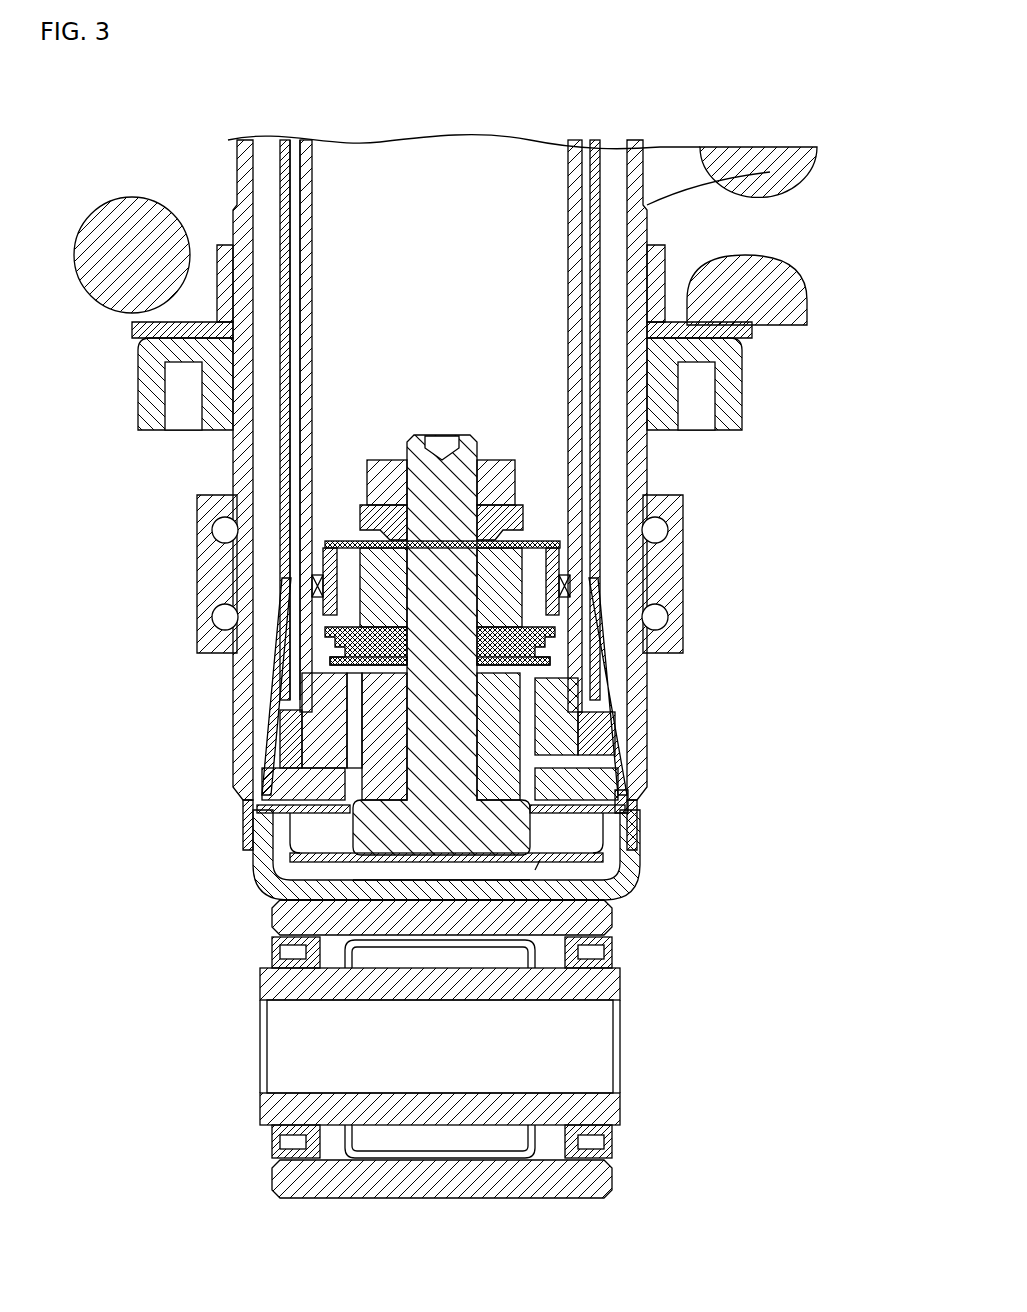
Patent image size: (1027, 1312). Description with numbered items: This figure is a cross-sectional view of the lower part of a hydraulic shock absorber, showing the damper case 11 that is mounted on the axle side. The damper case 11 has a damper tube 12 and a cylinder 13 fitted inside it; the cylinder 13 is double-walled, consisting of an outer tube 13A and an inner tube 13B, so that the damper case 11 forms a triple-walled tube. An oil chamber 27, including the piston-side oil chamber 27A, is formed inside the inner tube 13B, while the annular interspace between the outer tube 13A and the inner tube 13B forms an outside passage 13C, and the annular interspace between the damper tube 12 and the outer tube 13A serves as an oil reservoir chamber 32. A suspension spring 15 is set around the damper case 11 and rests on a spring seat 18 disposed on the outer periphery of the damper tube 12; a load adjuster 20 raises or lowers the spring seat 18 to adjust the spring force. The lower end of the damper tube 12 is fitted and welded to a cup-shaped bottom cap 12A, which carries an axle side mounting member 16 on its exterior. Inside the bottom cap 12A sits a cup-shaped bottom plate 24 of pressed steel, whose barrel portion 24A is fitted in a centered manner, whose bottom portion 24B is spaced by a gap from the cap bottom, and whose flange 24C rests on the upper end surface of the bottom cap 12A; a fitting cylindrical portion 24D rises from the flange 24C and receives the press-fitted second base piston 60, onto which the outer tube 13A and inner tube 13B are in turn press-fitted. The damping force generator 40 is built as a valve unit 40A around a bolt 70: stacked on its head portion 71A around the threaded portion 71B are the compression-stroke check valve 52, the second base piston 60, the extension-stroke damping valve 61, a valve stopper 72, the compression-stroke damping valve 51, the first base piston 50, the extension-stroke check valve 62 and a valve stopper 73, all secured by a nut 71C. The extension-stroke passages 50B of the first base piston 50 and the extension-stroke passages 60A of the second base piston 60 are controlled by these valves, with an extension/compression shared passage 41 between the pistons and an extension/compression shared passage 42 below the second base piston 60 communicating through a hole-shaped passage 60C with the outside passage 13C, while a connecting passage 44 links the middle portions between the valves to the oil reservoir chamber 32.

The damper case 11 is at (232, 148).
The damper tube 12 is at (240, 172).
The bottom cap 12A is at (268, 872).
The cylinder 13 is at (498, 426).
The outer tube 13A is at (576, 216).
The inner tube 13B is at (595, 236).
The outside passage 13C is at (296, 240).
The suspension spring 15 is at (136, 200).
The axle side mounting member 16 is at (278, 1178).
The spring seat 18 is at (135, 330).
The load adjuster 20 is at (145, 388).
The bottom plate 24 is at (503, 906).
The barrel portion 24A is at (625, 845).
The bottom portion 24B is at (424, 882).
The flange 24C is at (612, 822).
The fitting cylindrical portion 24D is at (622, 792).
The oil chamber 27 is at (441, 158).
The piston-side oil chamber 27A is at (508, 158).
The oil reservoir chamber 32 is at (268, 610).
The damping force generator 40 is at (449, 598).
The valve unit 40A is at (462, 447).
The extension/compression shared passage 41 is at (660, 618).
The extension/compression shared passage 42 is at (300, 815).
The connecting passage 44 is at (612, 760).
The first base piston 50 is at (434, 587).
The extension-stroke passages 50B is at (330, 566).
The compression-stroke damping valve 51 is at (340, 650).
The compression-stroke check valve 52 is at (538, 872).
The second base piston 60 is at (447, 736).
The extension-stroke passages 60A is at (325, 762).
The hole-shaped passage 60C is at (345, 745).
The extension-stroke damping valve 61 is at (320, 706).
The extension-stroke check valve 62 is at (660, 528).
The bolt 70 is at (396, 918).
The head portion 71A is at (300, 903).
The threaded portion 71B is at (380, 462).
The nut 71C is at (368, 508).
The valve stopper 72 is at (338, 662).
The valve stopper 73 is at (348, 542).